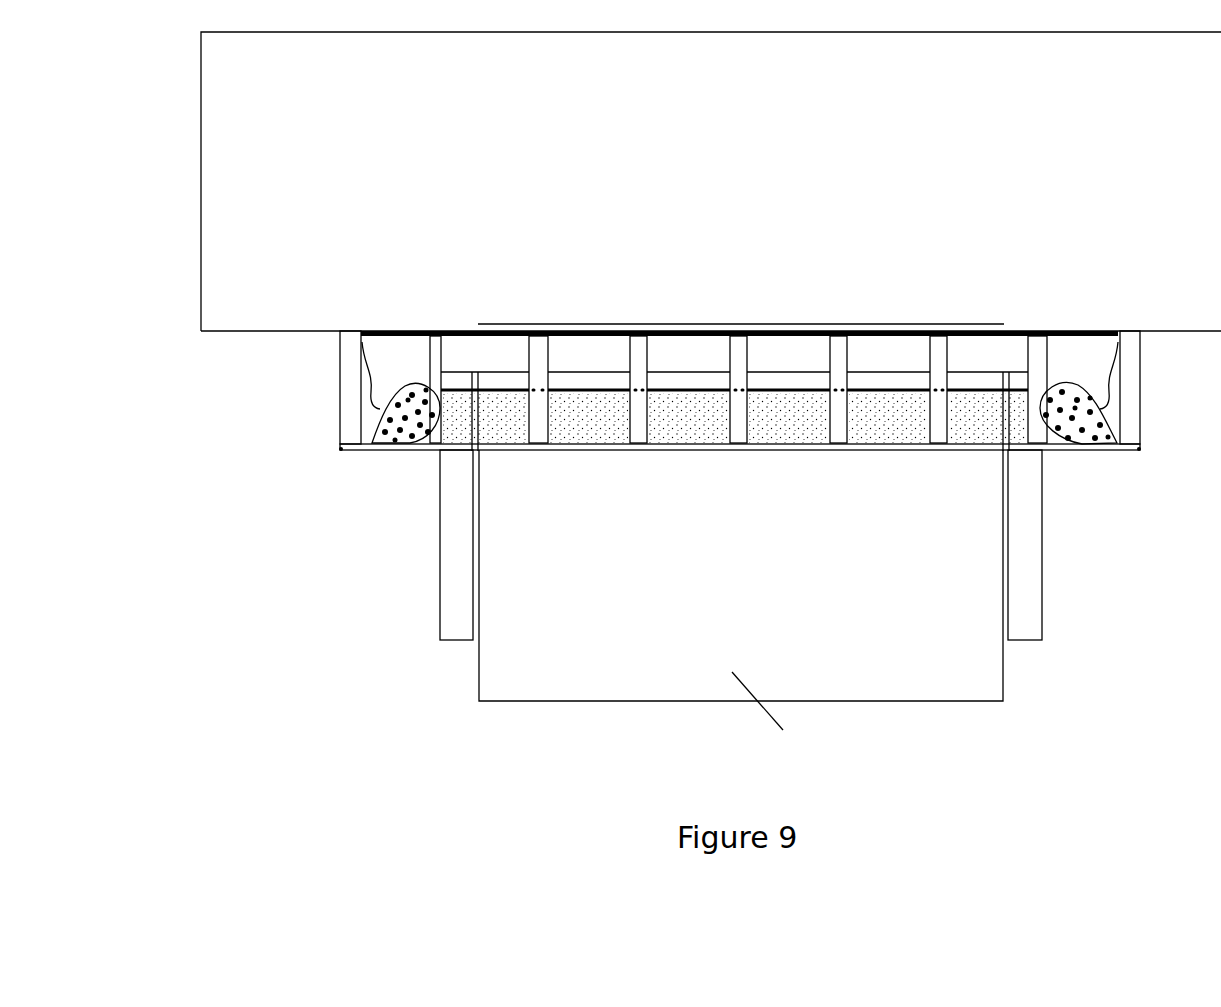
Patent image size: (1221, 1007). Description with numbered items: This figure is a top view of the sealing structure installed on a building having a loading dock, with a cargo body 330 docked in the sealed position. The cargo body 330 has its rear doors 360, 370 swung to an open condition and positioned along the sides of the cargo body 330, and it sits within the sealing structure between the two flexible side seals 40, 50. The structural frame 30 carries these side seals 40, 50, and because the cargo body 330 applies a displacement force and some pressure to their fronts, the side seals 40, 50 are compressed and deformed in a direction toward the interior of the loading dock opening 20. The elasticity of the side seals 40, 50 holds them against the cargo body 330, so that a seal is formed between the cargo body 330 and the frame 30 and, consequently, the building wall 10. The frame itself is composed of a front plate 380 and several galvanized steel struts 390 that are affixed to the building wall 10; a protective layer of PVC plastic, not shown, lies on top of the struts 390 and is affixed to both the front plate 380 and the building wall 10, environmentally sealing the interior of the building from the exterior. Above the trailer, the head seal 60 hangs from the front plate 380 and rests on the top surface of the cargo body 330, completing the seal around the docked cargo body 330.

The building wall 10 is at (297, 288).
The loading dock opening 20 is at (709, 326).
The structural frame 30 is at (1128, 383).
The flexible side seal 40 is at (1083, 422).
The flexible side seal 50 is at (392, 428).
The head seal 60 is at (968, 420).
The cargo body 330 is at (940, 630).
The rear door 360 is at (1028, 565).
The rear door 370 is at (452, 553).
The front plate 380 is at (1068, 447).
The galvanized steel struts 390 is at (1037, 353).